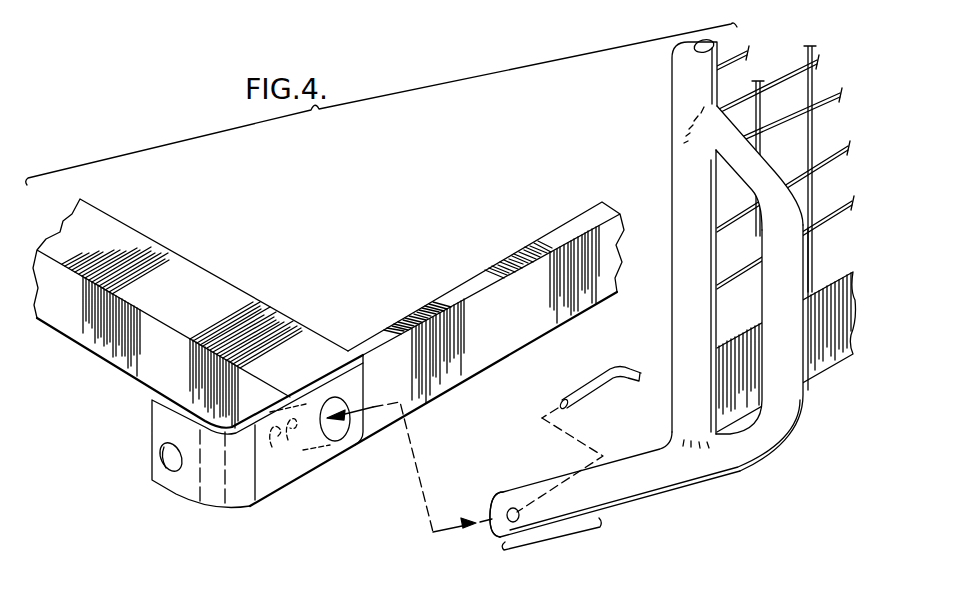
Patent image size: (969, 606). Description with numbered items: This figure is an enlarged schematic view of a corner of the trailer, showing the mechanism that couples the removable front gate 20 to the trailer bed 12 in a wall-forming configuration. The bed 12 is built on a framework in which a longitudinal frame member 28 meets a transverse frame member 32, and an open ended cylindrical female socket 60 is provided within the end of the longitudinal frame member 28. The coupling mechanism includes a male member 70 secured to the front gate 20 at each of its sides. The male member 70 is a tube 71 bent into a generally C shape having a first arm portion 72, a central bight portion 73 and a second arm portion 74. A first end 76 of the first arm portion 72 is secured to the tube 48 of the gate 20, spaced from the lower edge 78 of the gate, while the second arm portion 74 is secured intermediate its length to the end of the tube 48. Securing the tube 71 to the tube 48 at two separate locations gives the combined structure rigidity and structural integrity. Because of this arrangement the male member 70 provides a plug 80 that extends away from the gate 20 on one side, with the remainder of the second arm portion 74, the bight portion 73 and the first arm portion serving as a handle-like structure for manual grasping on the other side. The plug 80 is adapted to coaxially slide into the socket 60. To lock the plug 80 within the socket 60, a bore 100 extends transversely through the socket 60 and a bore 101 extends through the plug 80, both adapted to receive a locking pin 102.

The trailer bed 12 is at (221, 268).
The front gate 20 is at (652, 99).
The longitudinal frame member 28 is at (138, 255).
The transverse frame member 32 is at (482, 284).
The tube 48 is at (672, 290).
The female socket 60 is at (334, 433).
The male member 70 is at (489, 492).
The tube 71 is at (748, 474).
The first arm portion 72 is at (753, 184).
The central bight portion 73 is at (792, 339).
The second arm portion 74 is at (656, 486).
The first end 76 is at (705, 138).
The lower edge 78 is at (825, 372).
The plug 80 is at (558, 544).
The bore 100 is at (273, 449).
The bore 101 is at (501, 532).
The pin 102 is at (625, 363).